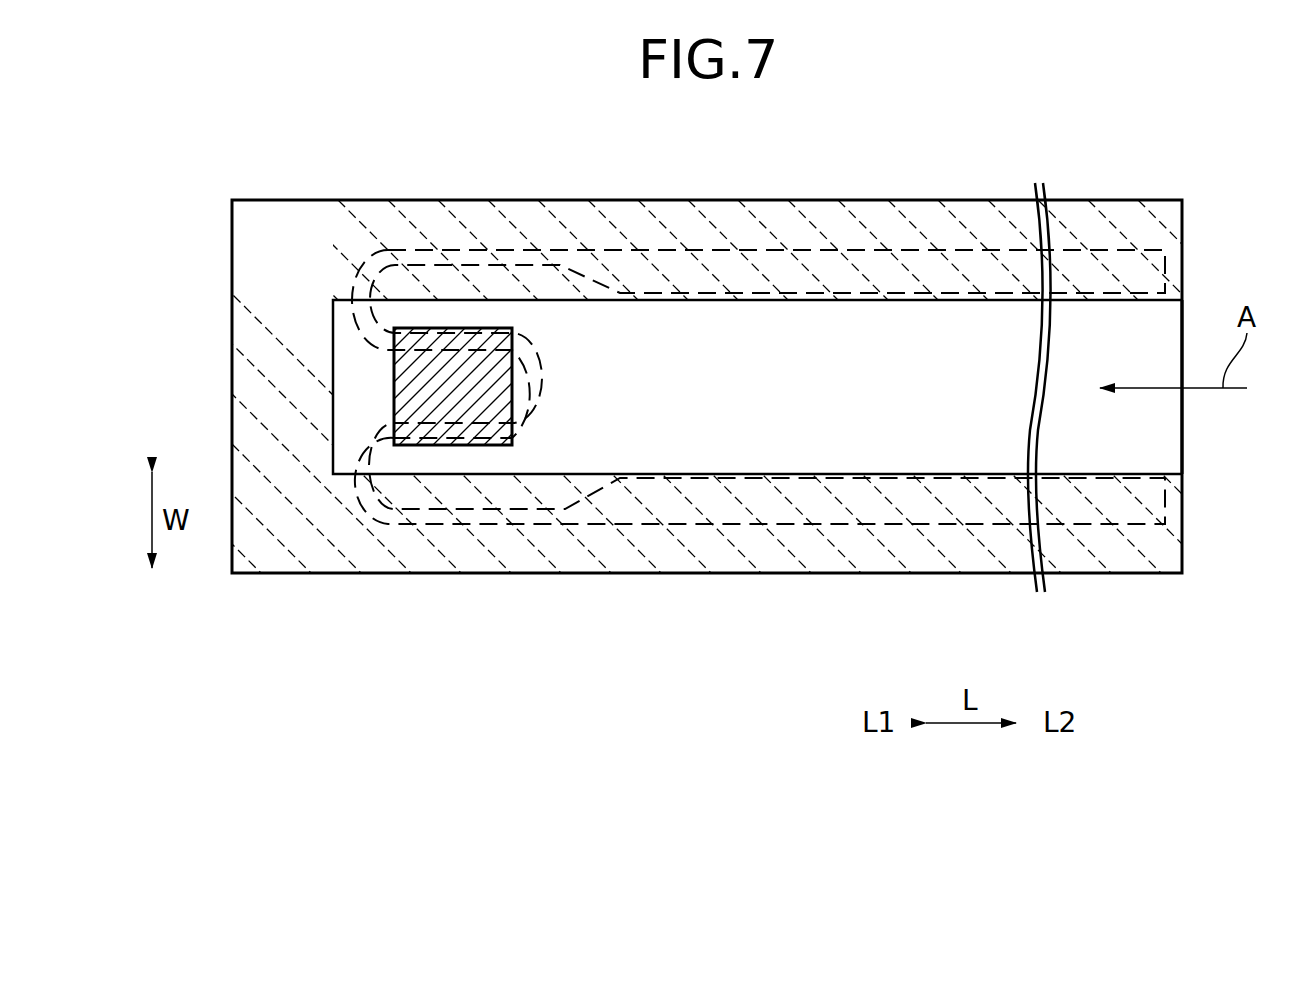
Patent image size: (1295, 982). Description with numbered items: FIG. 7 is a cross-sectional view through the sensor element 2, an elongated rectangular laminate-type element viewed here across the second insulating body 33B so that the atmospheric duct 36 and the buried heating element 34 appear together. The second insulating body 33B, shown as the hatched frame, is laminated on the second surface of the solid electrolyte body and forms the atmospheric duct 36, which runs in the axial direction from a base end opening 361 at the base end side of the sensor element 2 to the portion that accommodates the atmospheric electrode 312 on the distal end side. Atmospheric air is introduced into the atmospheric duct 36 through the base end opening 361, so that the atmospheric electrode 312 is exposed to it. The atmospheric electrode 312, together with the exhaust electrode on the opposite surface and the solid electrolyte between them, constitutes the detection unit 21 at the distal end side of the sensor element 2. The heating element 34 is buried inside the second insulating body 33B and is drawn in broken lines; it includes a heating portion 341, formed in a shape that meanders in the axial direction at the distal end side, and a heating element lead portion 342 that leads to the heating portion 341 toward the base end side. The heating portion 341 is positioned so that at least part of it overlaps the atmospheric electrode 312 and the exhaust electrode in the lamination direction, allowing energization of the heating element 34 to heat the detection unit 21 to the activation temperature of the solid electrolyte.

The sensor element 2 is at (1133, 605).
The detection unit 21 is at (491, 190).
The second insulating body 33B is at (305, 506).
The heating element 34 is at (689, 530).
The heating portion 341 is at (405, 248).
The heating element lead portion 342 is at (778, 262).
The atmospheric duct 36 is at (790, 403).
The base end opening 361 is at (1183, 415).
The atmospheric electrode 312 is at (462, 392).